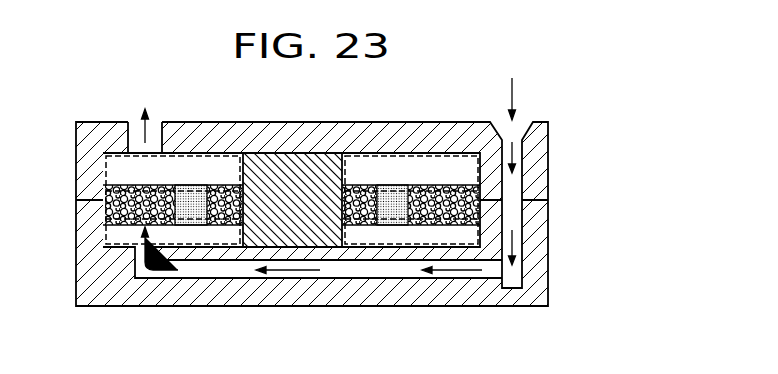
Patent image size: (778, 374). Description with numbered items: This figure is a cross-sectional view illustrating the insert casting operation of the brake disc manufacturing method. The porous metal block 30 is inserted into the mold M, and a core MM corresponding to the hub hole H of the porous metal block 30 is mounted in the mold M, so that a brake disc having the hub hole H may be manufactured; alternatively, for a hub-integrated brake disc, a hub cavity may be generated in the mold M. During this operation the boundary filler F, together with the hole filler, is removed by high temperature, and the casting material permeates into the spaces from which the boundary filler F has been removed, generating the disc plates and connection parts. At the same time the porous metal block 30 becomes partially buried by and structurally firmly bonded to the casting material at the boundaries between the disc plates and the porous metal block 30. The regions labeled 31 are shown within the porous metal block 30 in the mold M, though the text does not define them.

The mold M is at (540, 243).
The hub hole H is at (330, 200).
The core MM is at (292, 163).
The porous metal block 30 is at (462, 187).
The absorbent member 31 is at (196, 196).
The boundary filler F is at (436, 153).